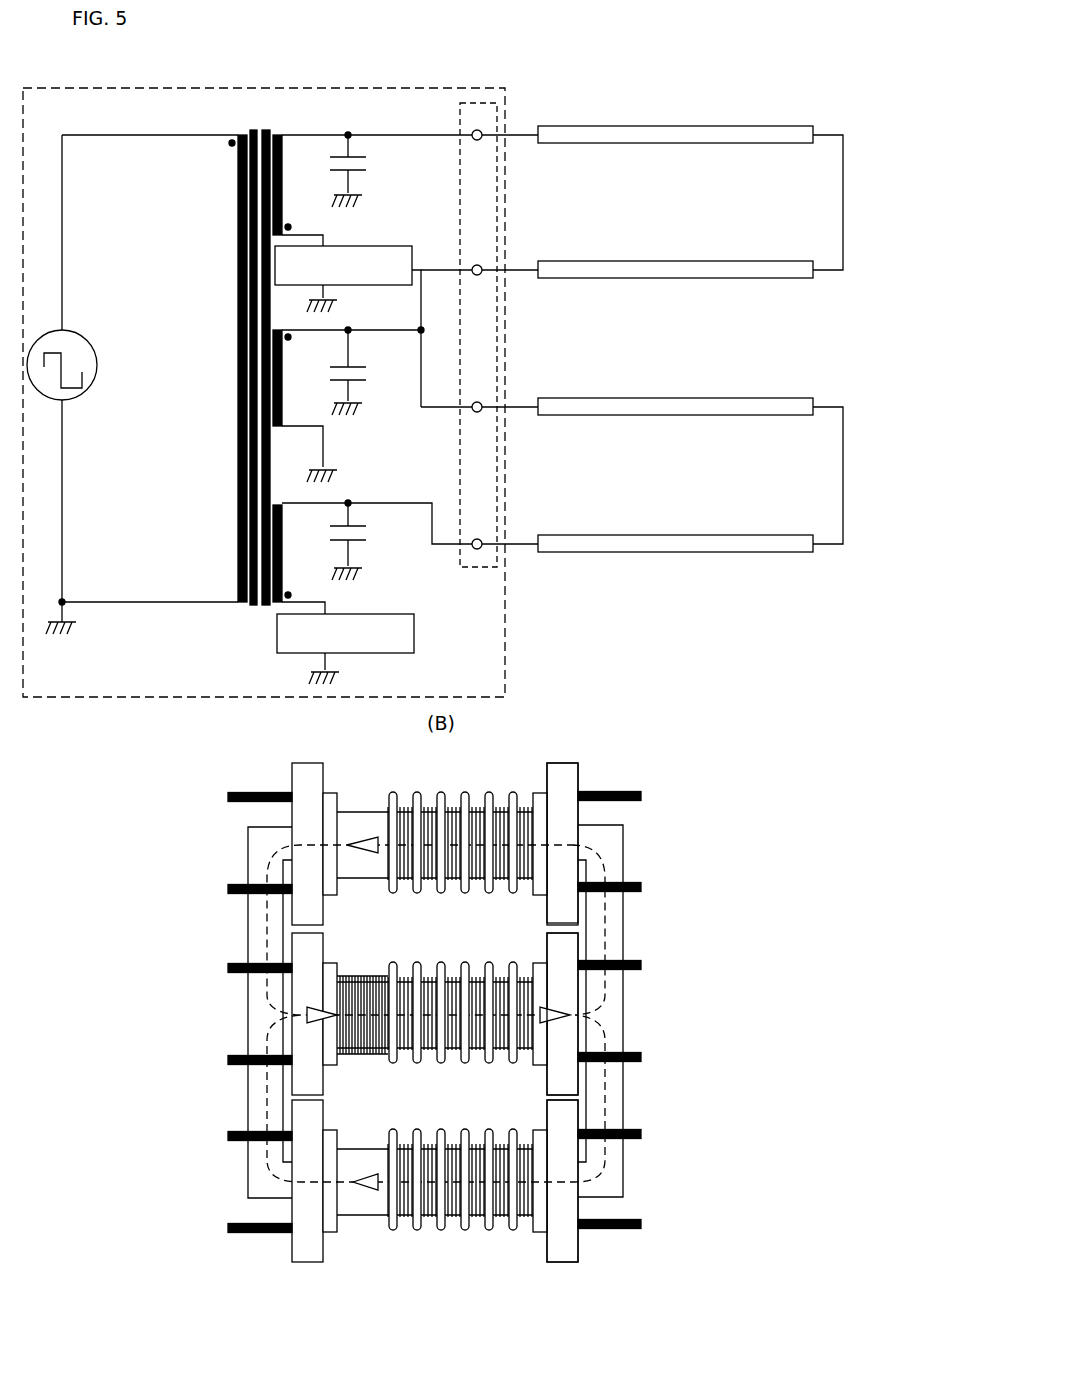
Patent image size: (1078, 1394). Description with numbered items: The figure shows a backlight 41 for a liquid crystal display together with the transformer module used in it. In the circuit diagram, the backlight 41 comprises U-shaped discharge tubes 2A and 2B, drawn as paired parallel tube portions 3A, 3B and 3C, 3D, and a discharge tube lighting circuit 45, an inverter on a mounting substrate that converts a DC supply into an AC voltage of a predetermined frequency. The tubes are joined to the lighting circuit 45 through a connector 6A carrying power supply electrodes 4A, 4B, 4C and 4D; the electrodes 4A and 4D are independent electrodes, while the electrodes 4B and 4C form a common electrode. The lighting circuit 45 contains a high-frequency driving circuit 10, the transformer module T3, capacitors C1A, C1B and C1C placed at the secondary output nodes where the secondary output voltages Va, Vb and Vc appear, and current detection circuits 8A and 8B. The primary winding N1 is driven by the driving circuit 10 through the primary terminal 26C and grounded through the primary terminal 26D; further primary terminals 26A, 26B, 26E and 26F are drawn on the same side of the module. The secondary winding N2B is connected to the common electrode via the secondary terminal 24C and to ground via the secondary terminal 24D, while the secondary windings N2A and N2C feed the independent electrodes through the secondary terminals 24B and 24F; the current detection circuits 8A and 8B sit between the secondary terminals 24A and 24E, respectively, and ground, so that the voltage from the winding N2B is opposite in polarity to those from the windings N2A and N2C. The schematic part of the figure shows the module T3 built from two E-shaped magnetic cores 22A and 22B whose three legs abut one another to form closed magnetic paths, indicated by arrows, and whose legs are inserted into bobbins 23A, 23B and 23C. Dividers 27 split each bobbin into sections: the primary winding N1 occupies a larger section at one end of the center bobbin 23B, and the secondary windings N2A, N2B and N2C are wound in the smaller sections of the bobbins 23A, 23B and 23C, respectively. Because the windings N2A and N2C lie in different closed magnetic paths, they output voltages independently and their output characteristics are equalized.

The discharge tube lighting circuit 45 is at (330, 88).
The high-frequency driving circuit 10 is at (79, 335).
The transformer module T3 is at (656, 759).
The primary winding N1 is at (386, 958).
The secondary winding N2A is at (530, 790).
The secondary winding N2B is at (530, 958).
The secondary winding N2C is at (530, 1128).
The secondary output voltage Va is at (352, 128).
The secondary output voltage Vb is at (352, 323).
The secondary output voltage Vc is at (352, 496).
The capacitor C1A is at (370, 171).
The capacitor C1B is at (370, 372).
The capacitor C1C is at (370, 541).
The current detection circuit 8A is at (390, 246).
The current detection circuit 8B is at (390, 614).
The connector 6A is at (470, 103).
The power supply electrode 4A is at (482, 131).
The power supply electrode 4B is at (482, 266).
The power supply electrode 4C is at (482, 403).
The power supply electrode 4D is at (482, 540).
The backlight 41 is at (690, 292).
The U-shaped discharge tube 2A is at (690, 160).
The U-shaped discharge tube 2B is at (690, 421).
The discharge lamp 3A is at (663, 124).
The discharge lamp 3B is at (663, 259).
The discharge lamp 3C is at (663, 397).
The discharge lamp 3D is at (663, 534).
The E-shaped magnetic core 22A is at (265, 838).
The E-shaped magnetic core 22B is at (610, 843).
The bobbin 23A is at (568, 905).
The bobbin 23B is at (568, 1090).
The bobbin 23C is at (567, 1243).
The secondary terminal 24A is at (600, 803).
The secondary terminal 24B is at (600, 893).
The secondary terminal 24C is at (600, 971).
The secondary terminal 24D is at (600, 1063).
The secondary terminal 24E is at (600, 1140).
The secondary terminal 24F is at (600, 1230).
The terminal 26A is at (272, 793).
The terminal 26B is at (272, 886).
The primary terminal 26C is at (272, 964).
The primary terminal 26D is at (272, 1056).
The terminal 26E is at (272, 1132).
The terminal 26F is at (272, 1224).
The divider 27 is at (393, 1231).